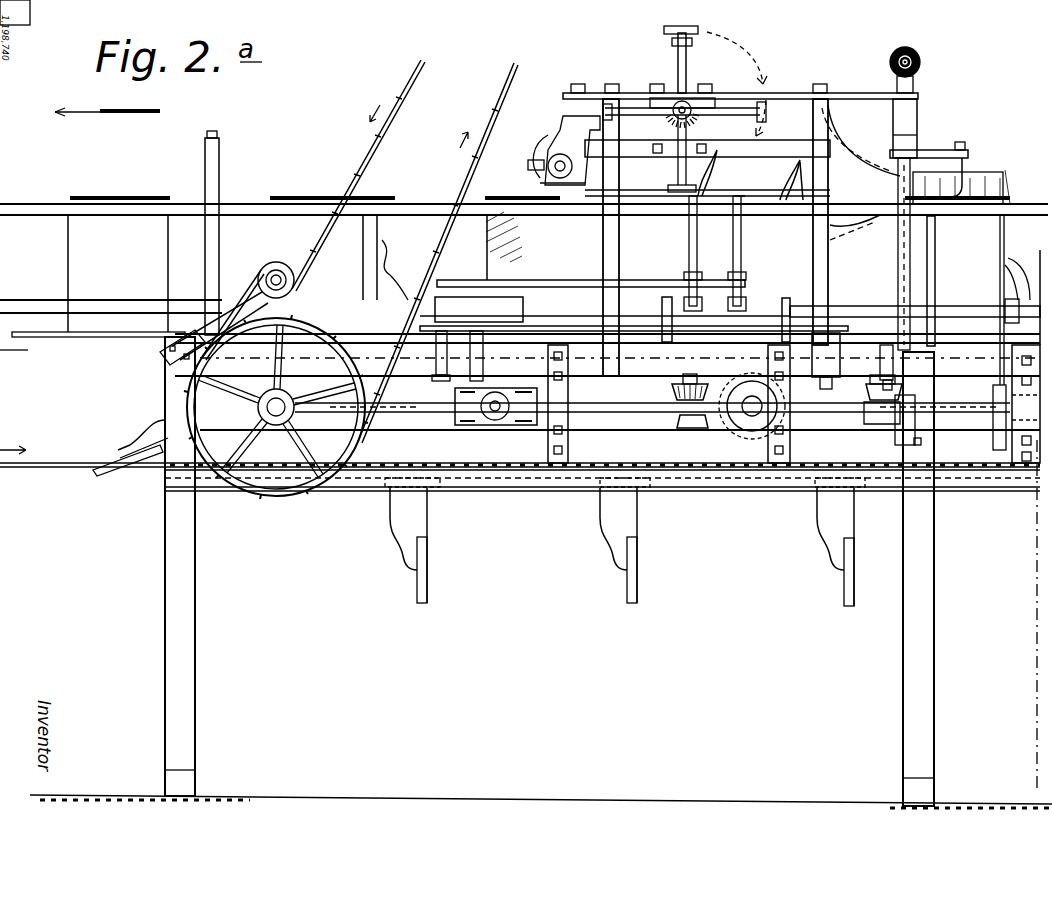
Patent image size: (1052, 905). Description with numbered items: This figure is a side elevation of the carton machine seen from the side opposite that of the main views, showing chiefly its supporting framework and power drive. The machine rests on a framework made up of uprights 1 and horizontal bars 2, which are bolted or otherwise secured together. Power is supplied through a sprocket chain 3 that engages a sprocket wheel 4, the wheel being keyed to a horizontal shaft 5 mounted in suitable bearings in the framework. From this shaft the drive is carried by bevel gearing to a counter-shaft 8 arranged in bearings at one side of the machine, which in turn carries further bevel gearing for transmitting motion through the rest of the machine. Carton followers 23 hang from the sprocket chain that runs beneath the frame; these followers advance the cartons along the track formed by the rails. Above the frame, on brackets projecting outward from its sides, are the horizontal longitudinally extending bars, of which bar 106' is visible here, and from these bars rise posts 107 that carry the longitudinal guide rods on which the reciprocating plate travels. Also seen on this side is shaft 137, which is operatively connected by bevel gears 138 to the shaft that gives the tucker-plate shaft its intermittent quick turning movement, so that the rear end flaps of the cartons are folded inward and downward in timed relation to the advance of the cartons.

The uprights 1 is at (200, 592).
The horizontal bars 2 is at (512, 463).
The sprocket chain 3 is at (353, 128).
The sprocket wheel 4 is at (312, 326).
The horizontal shaft 5 is at (280, 425).
The counter-shaft 8 is at (591, 410).
The carton followers 23 is at (435, 555).
The posts 107 is at (666, 297).
The horizontal longitudinally extending bar 106' is at (653, 302).
The shaft 137 is at (695, 420).
The bevel gears 138 is at (680, 392).